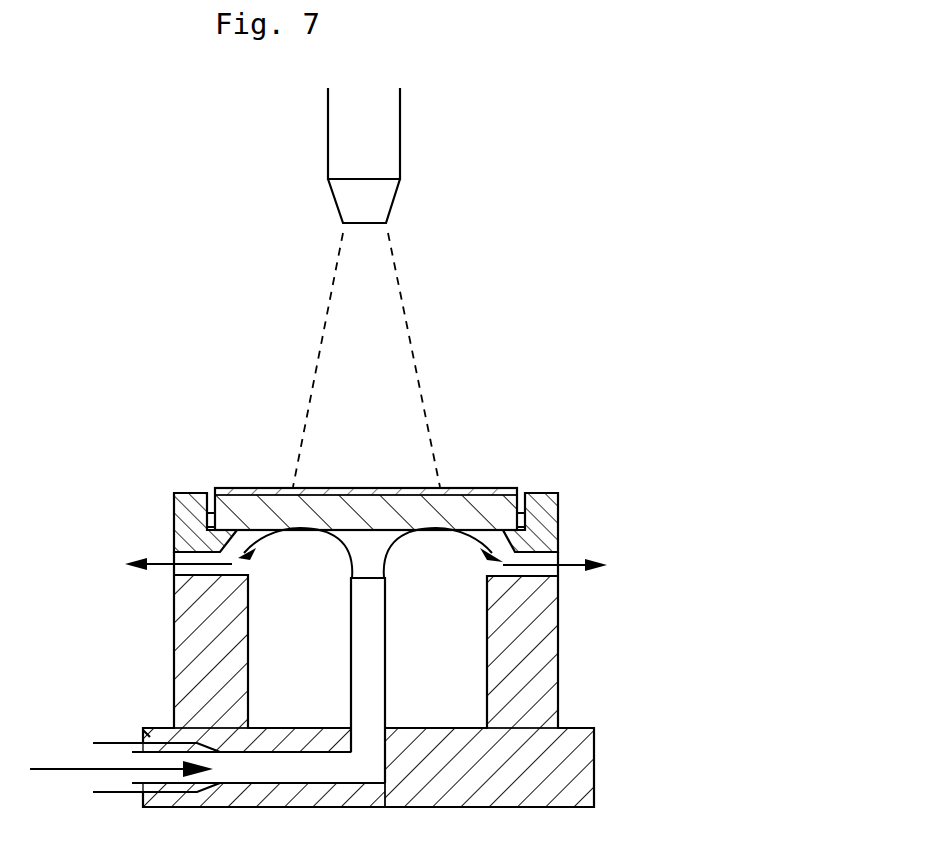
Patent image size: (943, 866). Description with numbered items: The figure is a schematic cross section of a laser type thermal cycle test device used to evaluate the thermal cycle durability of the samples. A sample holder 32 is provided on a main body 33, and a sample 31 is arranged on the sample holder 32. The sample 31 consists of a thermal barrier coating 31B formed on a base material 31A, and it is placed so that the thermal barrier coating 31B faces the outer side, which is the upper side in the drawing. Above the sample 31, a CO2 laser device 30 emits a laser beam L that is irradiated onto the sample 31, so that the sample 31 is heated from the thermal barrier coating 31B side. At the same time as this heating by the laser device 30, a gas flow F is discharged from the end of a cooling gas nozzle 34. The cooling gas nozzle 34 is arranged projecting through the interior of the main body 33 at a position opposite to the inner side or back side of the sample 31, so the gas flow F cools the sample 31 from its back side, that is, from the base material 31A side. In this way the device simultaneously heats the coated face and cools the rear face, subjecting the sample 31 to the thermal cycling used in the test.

The CO2 laser device 30 is at (385, 148).
The laser beam L is at (340, 318).
The sample 31 is at (500, 394).
The base material 31A is at (500, 490).
The thermal barrier coating 31B is at (470, 488).
The sample holder 32 is at (558, 513).
The main body 33 is at (537, 652).
The cooling gas nozzle 34 is at (368, 640).
The gas flow F is at (70, 768).